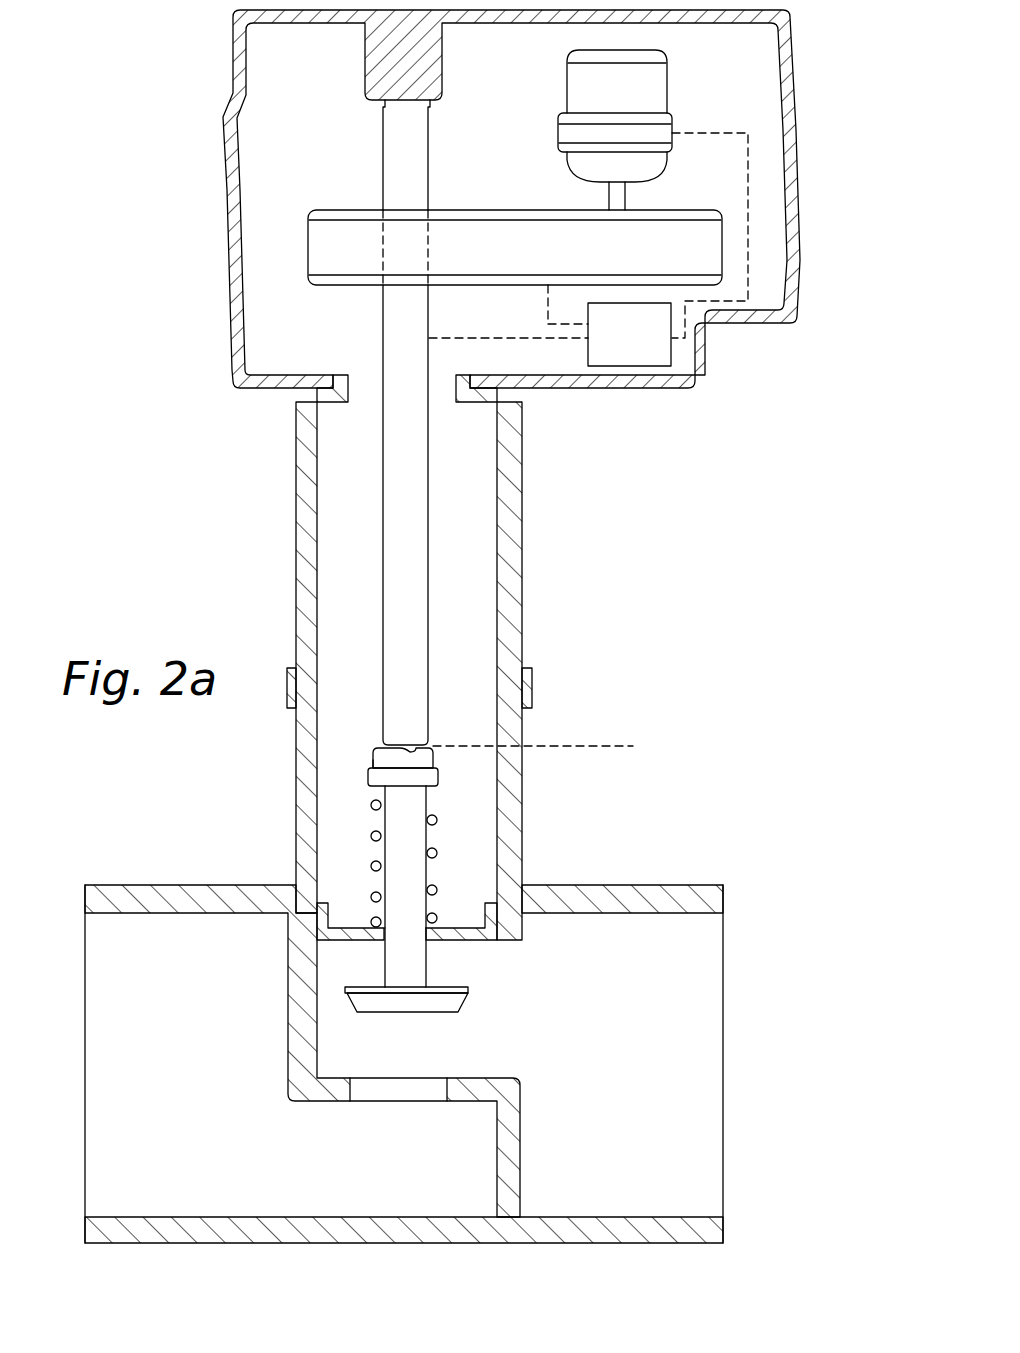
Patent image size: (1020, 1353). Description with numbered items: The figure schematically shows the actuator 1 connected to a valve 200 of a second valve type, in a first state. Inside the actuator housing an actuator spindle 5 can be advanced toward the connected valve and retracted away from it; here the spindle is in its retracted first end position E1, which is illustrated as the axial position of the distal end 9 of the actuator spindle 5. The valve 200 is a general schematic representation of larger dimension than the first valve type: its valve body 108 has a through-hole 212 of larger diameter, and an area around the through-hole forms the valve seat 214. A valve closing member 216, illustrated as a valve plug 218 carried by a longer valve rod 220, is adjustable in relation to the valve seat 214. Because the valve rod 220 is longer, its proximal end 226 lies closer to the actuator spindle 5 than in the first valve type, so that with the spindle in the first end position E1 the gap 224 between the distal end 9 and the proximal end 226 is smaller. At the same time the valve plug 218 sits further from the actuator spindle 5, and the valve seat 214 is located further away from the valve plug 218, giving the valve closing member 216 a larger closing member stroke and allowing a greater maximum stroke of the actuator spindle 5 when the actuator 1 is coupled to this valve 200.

The actuator 1 is at (180, 82).
The actuator spindle 5 is at (397, 553).
The distal end of the actuator spindle 9 is at (430, 745).
The gap 224 is at (375, 750).
The proximal end of the valve rod 226 is at (438, 776).
The first end position E1 is at (551, 747).
The valve 200 is at (150, 843).
The valve body 108 is at (665, 893).
The valve closing member 216 is at (368, 877).
The valve rod 220 is at (405, 965).
The valve seat 214 is at (447, 1078).
The valve plug 218 is at (382, 1003).
The through-hole 212 is at (418, 1092).